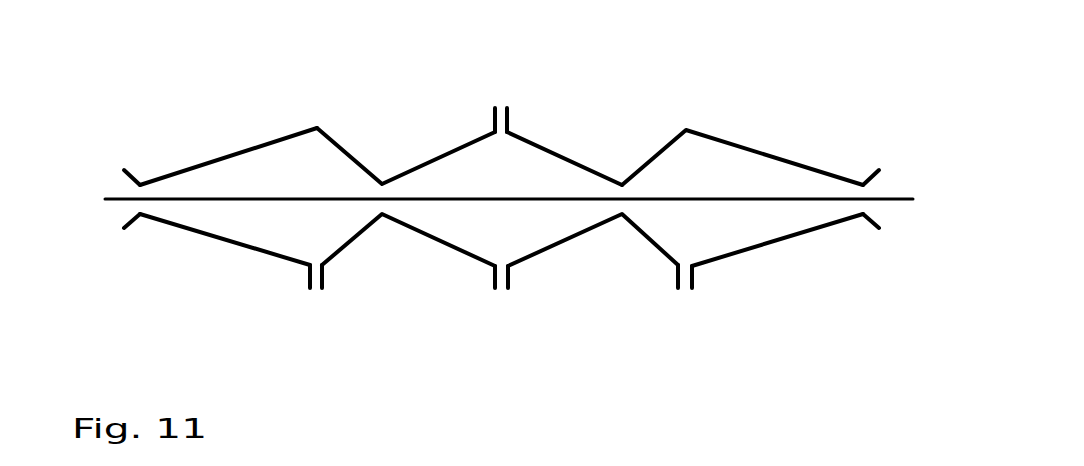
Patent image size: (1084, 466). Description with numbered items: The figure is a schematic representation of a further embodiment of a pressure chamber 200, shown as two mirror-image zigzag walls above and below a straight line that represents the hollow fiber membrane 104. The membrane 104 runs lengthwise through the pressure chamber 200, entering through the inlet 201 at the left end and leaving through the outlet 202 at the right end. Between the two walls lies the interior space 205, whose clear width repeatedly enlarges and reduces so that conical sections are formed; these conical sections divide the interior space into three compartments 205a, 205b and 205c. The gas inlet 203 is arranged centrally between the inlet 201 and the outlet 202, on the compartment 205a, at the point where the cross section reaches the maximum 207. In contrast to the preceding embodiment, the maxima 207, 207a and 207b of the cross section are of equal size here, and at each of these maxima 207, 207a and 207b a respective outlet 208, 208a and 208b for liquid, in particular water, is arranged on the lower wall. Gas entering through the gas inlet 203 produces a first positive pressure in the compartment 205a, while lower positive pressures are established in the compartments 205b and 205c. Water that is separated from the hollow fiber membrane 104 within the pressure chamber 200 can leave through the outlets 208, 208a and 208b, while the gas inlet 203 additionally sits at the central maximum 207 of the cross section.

The hollow fiber membrane 104 is at (903, 198).
The pressure chamber 200 is at (461, 102).
The inlet 201 is at (137, 192).
The outlet 202 is at (873, 208).
The gas inlet 203 is at (500, 110).
The interior space 205 is at (440, 227).
The compartment 205a is at (545, 165).
The compartment 205b is at (775, 172).
The compartment 205c is at (222, 170).
The maximum of the cross-section 207 is at (508, 263).
The maximum of the cross-section 207a is at (685, 128).
The maximum of the cross-section 207b is at (307, 267).
The outlet for liquid 208 is at (500, 288).
The outlet for liquid 208a is at (685, 290).
The outlet for liquid 208b is at (317, 288).